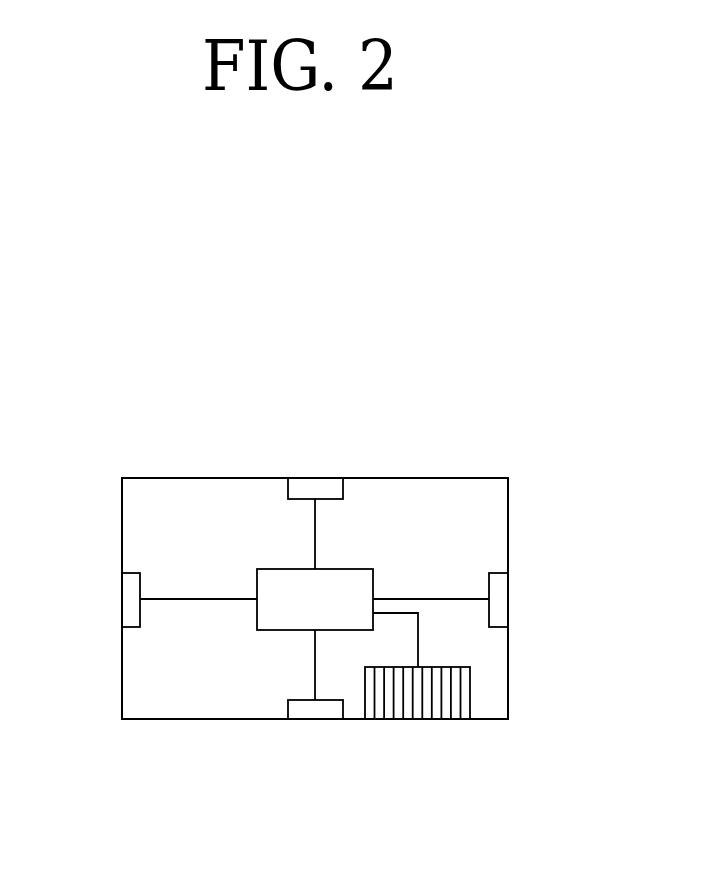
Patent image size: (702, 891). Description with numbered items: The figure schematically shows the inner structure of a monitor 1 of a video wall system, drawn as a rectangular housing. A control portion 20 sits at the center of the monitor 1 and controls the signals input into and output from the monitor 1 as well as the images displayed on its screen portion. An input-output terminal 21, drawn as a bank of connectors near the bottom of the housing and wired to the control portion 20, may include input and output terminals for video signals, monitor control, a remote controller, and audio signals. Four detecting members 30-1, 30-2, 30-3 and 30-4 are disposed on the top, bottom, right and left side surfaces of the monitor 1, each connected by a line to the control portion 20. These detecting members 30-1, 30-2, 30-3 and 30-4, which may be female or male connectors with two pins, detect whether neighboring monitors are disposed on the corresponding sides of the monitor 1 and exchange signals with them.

The monitor 1 is at (139, 453).
The control portion 20 is at (270, 568).
The input-output terminal 21 is at (410, 720).
The detecting member 30-1 is at (315, 478).
The detecting member 30-2 is at (315, 720).
The detecting member 30-3 is at (510, 598).
The detecting member 30-4 is at (120, 598).